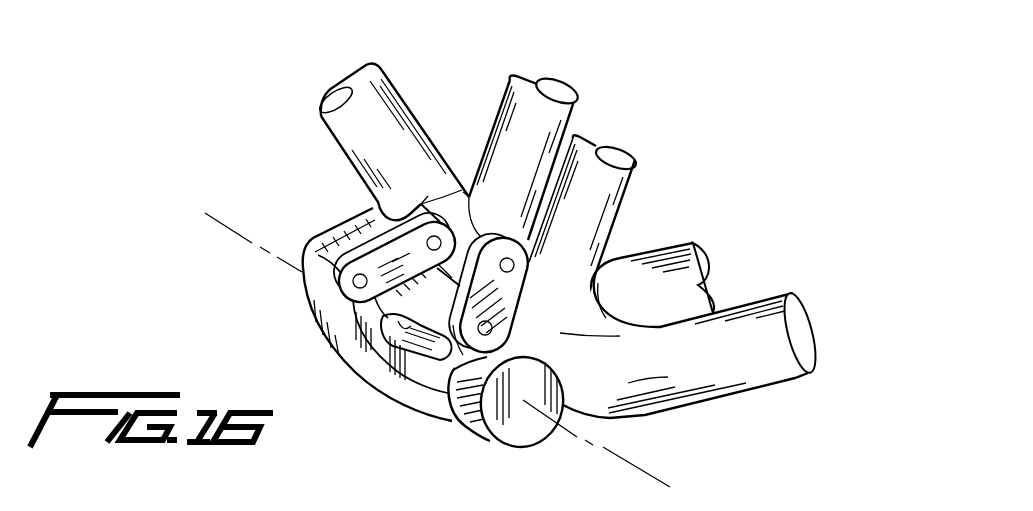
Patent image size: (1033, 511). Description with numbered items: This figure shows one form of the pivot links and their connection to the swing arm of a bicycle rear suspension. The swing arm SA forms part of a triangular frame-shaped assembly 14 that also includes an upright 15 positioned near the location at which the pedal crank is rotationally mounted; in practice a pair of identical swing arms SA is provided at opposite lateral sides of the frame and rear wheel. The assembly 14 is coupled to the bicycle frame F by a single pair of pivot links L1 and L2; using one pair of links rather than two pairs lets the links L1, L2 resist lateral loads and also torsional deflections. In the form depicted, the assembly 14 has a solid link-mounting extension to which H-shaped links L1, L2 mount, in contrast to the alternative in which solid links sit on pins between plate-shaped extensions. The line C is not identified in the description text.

The frame F is at (510, 85).
The pivot link L1 is at (353, 234).
The pivot link L2 is at (465, 192).
The upright 15 is at (622, 168).
The swing arm SA is at (692, 258).
The frame-shaped assembly 14 is at (776, 385).
The pivot axis C is at (634, 464).